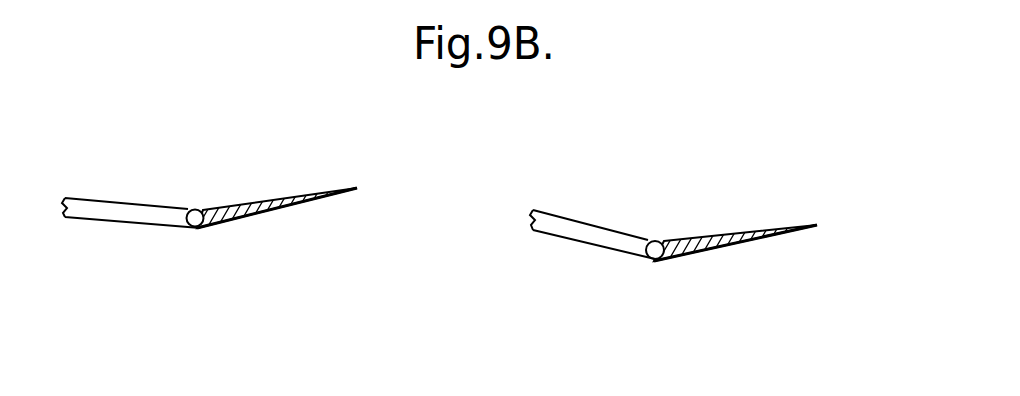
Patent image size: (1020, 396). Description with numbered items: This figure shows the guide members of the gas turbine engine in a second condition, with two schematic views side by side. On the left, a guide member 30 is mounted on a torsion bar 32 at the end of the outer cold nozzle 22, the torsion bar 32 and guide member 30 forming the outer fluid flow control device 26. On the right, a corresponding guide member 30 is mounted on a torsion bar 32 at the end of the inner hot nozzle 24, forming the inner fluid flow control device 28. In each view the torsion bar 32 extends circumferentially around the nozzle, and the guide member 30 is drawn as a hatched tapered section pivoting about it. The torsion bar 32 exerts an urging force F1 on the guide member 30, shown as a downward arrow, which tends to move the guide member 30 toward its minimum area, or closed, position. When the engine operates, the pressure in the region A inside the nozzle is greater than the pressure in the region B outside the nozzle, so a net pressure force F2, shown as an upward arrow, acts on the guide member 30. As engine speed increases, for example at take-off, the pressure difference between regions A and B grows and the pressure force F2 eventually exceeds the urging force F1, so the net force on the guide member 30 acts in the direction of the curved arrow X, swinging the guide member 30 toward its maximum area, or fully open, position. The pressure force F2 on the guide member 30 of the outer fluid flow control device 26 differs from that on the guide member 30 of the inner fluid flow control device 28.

The outer cold nozzle 22 is at (114, 194).
The inner hot nozzle 24 is at (617, 221).
The outer fluid flow control device 26 is at (219, 227).
The inner fluid flow control device 28 is at (665, 269).
The guide member 30 is at (307, 190).
The torsion bar 32 is at (196, 209).
The urging force F1 is at (257, 223).
The net pressure force F2 is at (225, 195).
The region inside the nozzle A is at (315, 202).
The region outside the nozzle B is at (255, 190).
The direction of net force X is at (364, 150).